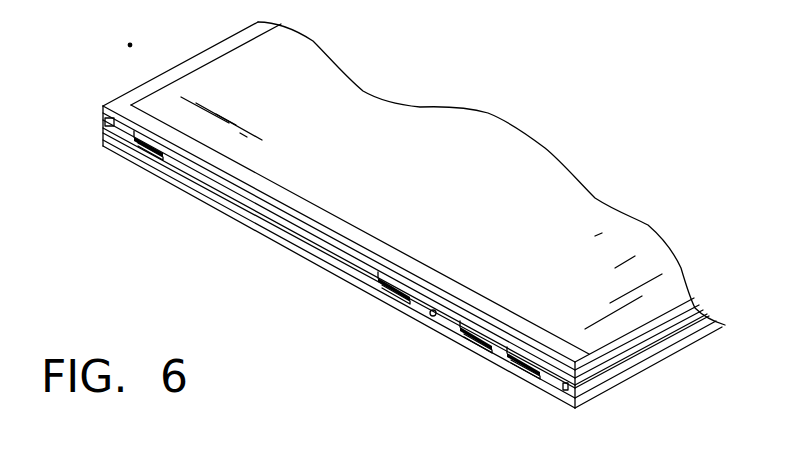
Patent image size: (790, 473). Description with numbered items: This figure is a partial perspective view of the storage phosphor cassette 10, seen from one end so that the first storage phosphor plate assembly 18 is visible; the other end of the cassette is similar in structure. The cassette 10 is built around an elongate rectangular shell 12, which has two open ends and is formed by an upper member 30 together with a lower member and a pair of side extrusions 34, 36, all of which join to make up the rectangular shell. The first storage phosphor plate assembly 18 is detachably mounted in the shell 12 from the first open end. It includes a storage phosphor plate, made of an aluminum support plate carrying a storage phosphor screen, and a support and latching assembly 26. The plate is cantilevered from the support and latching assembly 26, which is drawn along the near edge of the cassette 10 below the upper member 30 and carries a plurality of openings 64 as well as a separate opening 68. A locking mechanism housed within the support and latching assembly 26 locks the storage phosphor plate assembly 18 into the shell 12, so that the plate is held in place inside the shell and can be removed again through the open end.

The storage phosphor cassette 10 is at (177, 39).
The elongate rectangular shell 12 is at (540, 91).
The first storage phosphor plate assembly 18 is at (528, 405).
The support and latching assembly 26 is at (243, 245).
The upper member 30 is at (374, 105).
The side extrusion 34 is at (658, 358).
The side extrusion 36 is at (107, 103).
The openings 64 is at (135, 142).
The opening 68 is at (430, 316).